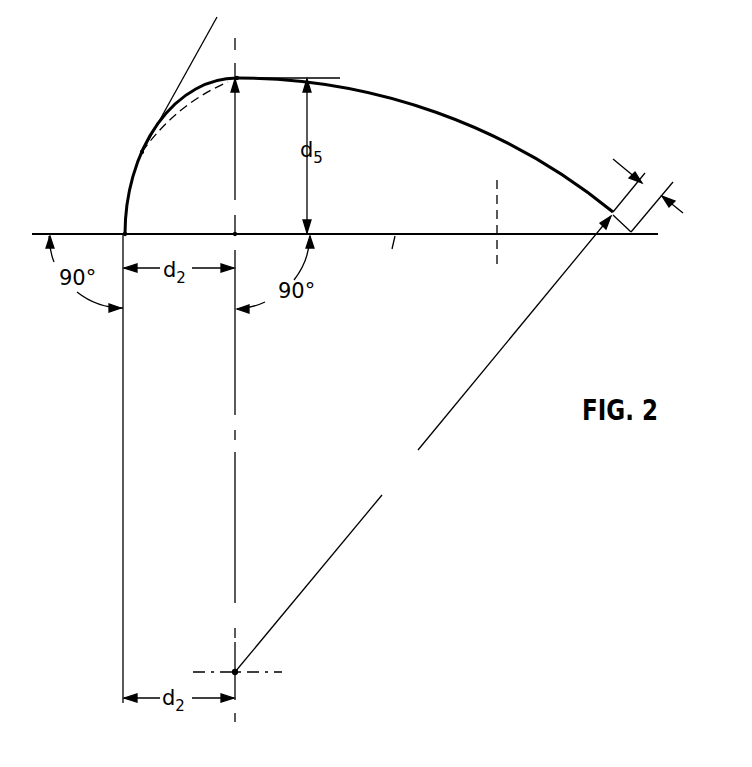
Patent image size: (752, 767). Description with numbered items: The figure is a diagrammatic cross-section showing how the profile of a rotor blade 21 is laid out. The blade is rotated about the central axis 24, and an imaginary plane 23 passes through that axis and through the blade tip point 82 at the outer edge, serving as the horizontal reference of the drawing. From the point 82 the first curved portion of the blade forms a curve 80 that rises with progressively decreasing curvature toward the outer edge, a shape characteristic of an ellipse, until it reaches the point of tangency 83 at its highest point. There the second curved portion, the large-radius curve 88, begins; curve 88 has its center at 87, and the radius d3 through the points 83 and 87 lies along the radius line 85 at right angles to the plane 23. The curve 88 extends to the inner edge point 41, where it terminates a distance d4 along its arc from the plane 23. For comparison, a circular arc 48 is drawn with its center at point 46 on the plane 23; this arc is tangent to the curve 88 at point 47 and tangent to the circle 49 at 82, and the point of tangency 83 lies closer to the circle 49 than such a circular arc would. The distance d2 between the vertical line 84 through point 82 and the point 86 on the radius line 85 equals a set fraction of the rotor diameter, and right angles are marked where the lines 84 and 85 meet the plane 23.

The blade 21 is at (181, 100).
The imaginary plane 23 is at (388, 254).
The central axis 24 is at (497, 237).
The inner edge 41 is at (612, 211).
The center point of circular arc 46 is at (281, 233).
The tangent point 47 is at (274, 78).
The circular arc 48 is at (194, 105).
The circle 49 is at (196, 48).
The curve 80 is at (141, 155).
The blade tip point 82 is at (124, 232).
The point of tangency 83 is at (240, 77).
The vertical line 84 is at (122, 468).
The radius line 85 is at (234, 169).
The point on radius line 86 is at (238, 238).
The center of curve 88 87 is at (237, 675).
The curve 88 is at (479, 131).